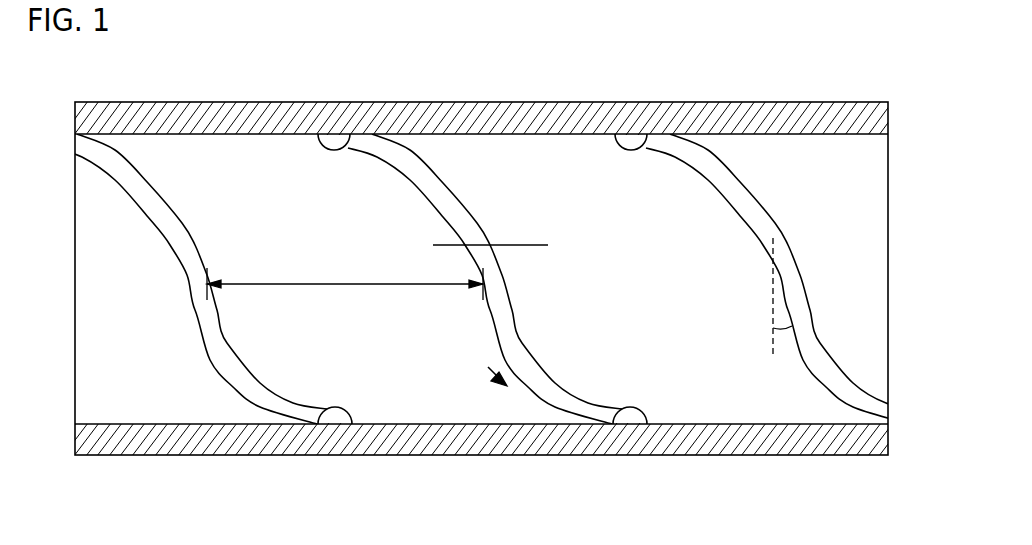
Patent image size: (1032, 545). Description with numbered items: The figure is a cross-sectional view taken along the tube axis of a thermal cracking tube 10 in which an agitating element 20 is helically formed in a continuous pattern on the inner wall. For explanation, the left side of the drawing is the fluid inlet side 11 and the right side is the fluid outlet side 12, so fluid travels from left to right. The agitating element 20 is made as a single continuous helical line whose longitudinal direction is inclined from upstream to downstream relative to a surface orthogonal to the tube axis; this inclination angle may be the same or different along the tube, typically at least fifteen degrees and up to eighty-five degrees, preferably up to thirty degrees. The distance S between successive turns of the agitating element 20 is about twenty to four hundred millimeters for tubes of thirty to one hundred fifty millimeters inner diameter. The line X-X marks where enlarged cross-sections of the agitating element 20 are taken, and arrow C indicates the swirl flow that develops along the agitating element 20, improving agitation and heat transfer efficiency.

The thermal cracking tube 10 is at (868, 80).
The agitating element 20 is at (690, 152).
The fluid inlet side 11 is at (87, 484).
The fluid outlet side 12 is at (875, 481).
The line X- X is at (490, 246).
The distance between agitating elements S is at (402, 284).
The arrow indicating swirl flow C is at (476, 332).